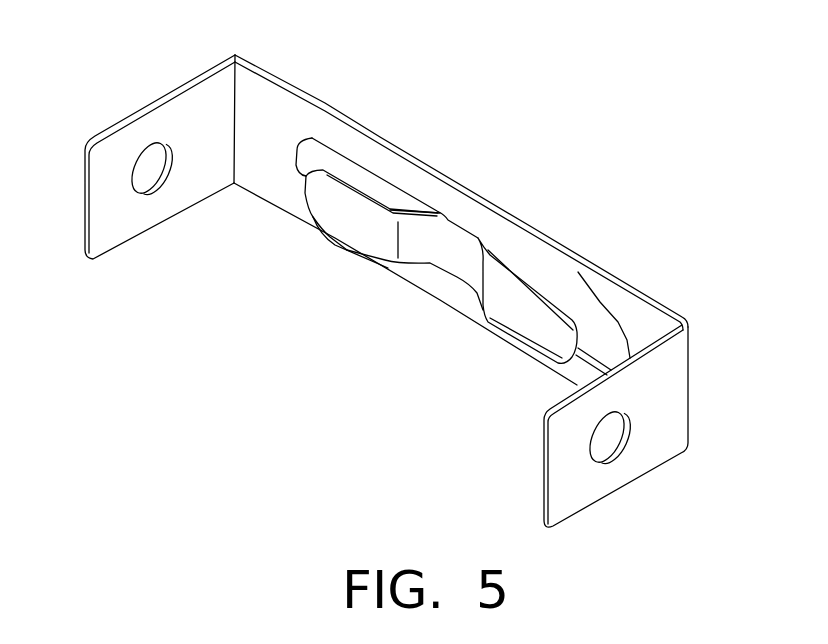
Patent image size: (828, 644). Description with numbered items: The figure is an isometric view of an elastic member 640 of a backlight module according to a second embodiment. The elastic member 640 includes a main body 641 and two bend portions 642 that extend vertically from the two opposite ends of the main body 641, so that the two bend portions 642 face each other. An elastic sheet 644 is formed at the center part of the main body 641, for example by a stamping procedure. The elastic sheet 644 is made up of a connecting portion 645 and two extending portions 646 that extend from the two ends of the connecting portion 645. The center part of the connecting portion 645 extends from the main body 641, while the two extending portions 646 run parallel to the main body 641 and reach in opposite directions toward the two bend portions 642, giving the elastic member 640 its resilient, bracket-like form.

The elastic member 640 is at (369, 280).
The main body 641 is at (275, 127).
The bend portions 642 is at (180, 120).
The elastic sheet 644 is at (525, 272).
The connecting portion 645 is at (458, 250).
The extending portions 646 is at (342, 212).